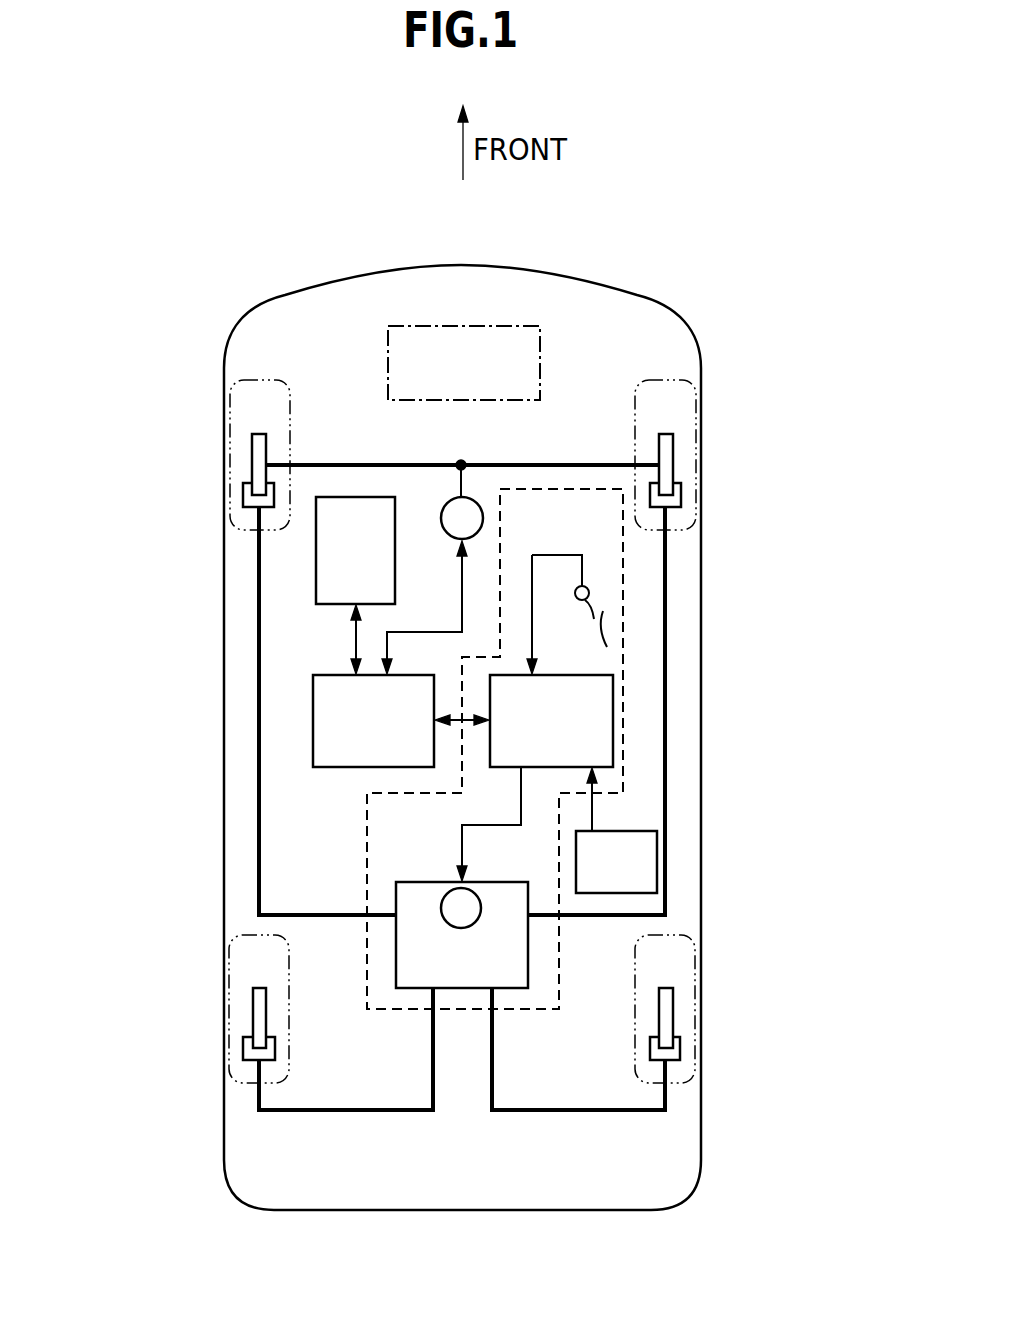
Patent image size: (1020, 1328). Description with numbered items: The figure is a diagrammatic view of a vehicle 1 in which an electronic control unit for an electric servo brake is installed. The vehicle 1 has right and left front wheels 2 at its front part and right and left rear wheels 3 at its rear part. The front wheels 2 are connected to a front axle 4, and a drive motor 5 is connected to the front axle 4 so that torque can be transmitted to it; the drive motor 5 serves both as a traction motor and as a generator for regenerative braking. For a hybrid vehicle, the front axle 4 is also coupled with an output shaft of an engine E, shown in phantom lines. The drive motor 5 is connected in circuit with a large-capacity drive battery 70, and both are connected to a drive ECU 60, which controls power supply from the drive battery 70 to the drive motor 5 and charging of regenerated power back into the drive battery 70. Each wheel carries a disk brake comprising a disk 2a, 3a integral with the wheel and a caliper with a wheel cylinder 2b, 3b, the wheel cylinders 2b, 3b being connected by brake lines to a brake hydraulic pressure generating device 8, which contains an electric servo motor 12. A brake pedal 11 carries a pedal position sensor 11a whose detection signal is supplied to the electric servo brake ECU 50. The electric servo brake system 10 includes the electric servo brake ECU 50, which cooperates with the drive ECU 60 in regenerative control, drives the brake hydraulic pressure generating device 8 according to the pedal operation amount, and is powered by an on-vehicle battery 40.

The vehicle 1 is at (567, 258).
The engine E is at (541, 345).
The front wheel 2 is at (232, 383).
The disk 2a is at (252, 455).
The wheel cylinder 2b is at (243, 493).
The rear wheel 3 is at (232, 1082).
The disk 3a is at (252, 1015).
The wheel cylinder 3b is at (243, 1048).
The front axle 4 is at (365, 464).
The drive motor 5 is at (444, 532).
The brake hydraulic pressure generating device 8 is at (432, 882).
The electric servo brake system 10 is at (555, 489).
The brake pedal 11 is at (600, 624).
The pedal position sensor 11a is at (574, 596).
The electric servo motor 12 is at (478, 893).
The on-vehicle battery 40 is at (623, 831).
The electric servo brake ECU 50 is at (500, 768).
The drive ECU 60 is at (335, 675).
The drive battery 70 is at (358, 497).